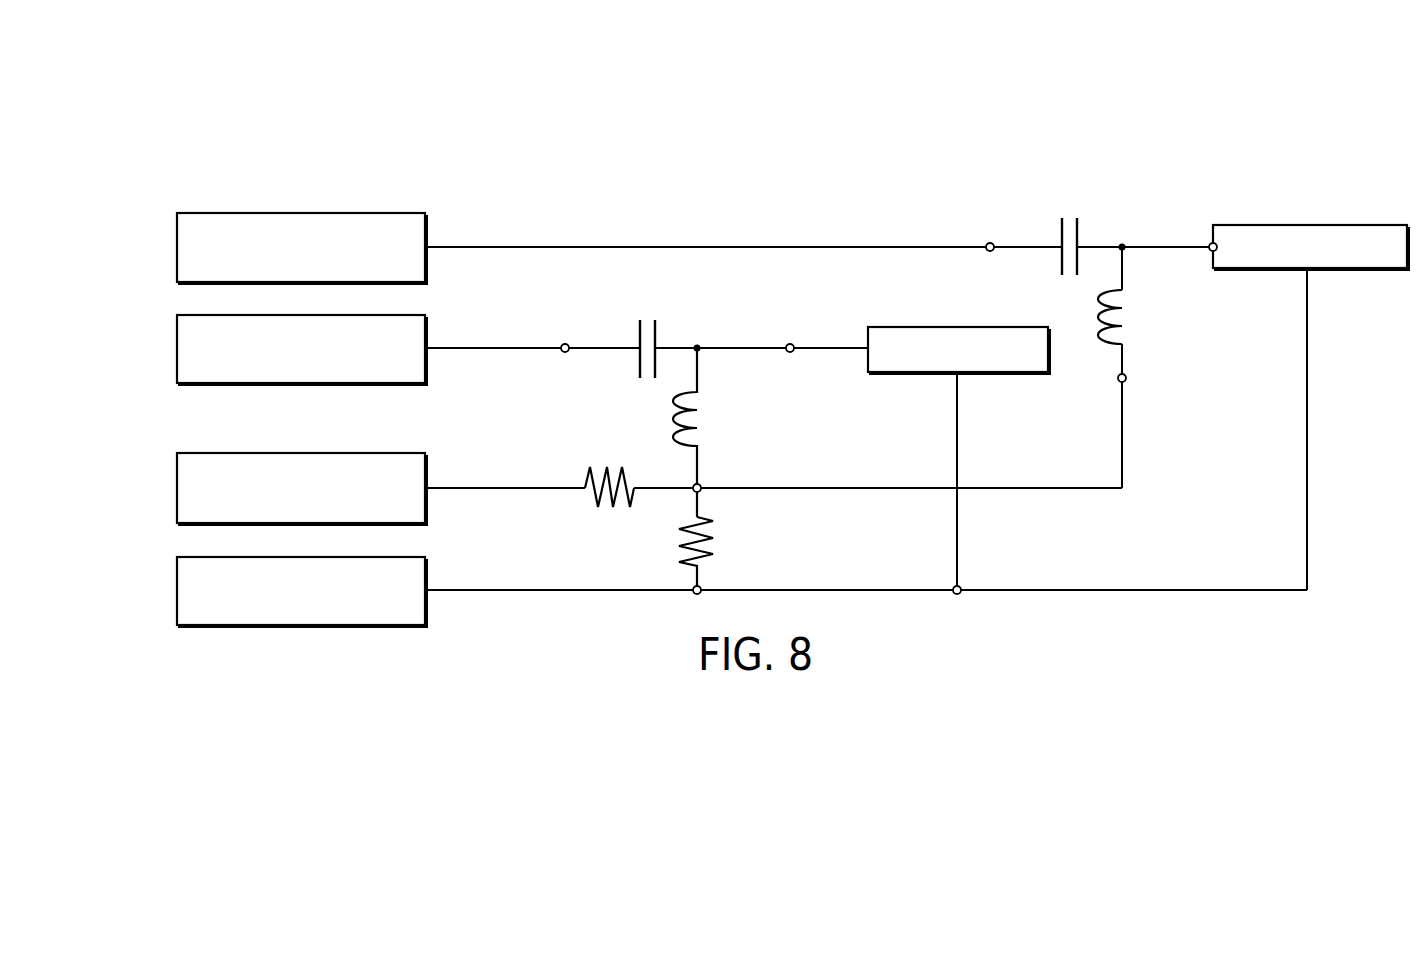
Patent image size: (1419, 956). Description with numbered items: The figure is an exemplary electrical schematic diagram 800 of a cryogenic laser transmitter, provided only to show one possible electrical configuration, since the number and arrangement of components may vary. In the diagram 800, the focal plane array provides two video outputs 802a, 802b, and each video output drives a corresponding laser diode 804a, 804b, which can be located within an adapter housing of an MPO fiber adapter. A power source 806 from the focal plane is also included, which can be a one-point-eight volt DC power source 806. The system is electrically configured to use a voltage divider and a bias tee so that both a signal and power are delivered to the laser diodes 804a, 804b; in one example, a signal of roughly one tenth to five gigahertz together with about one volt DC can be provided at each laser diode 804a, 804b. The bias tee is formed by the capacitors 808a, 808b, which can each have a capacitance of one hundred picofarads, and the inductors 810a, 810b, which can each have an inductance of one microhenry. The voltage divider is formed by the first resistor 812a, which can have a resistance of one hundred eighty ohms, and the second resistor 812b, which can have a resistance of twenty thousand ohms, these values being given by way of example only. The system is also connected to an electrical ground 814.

The electrical schematic diagram 800 is at (201, 102).
The video output 802a is at (177, 331).
The video output 802b is at (177, 236).
The laser diode 804a is at (890, 327).
The laser diode 804b is at (1307, 225).
The power source 806 is at (177, 474).
The capacitor 808a is at (638, 334).
The capacitor 808b is at (1070, 218).
The inductor 810a is at (673, 420).
The inductor 810b is at (1120, 325).
The first resistor 812a is at (612, 507).
The second resistor 812b is at (710, 555).
The electrical ground 814 is at (177, 578).